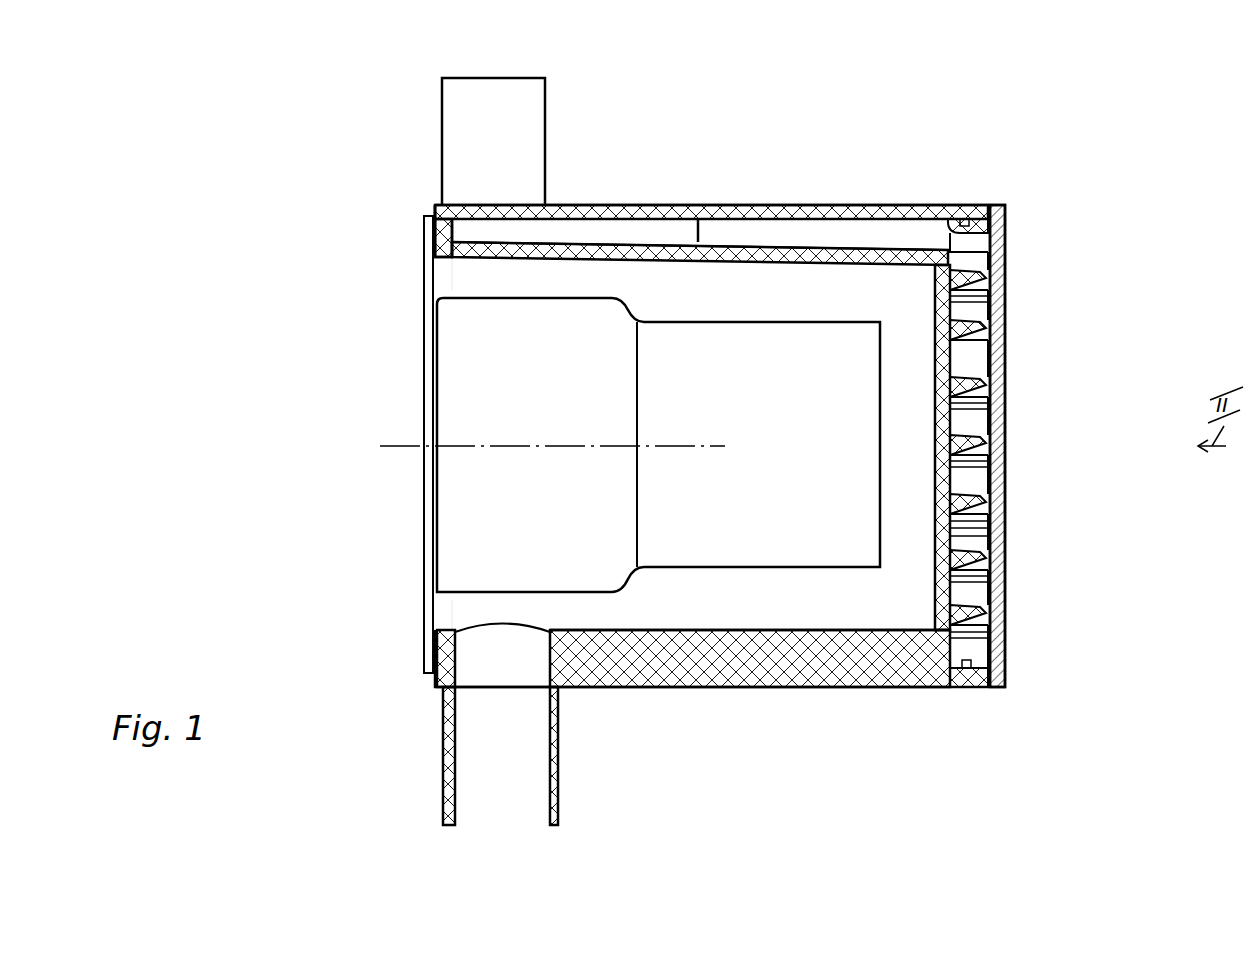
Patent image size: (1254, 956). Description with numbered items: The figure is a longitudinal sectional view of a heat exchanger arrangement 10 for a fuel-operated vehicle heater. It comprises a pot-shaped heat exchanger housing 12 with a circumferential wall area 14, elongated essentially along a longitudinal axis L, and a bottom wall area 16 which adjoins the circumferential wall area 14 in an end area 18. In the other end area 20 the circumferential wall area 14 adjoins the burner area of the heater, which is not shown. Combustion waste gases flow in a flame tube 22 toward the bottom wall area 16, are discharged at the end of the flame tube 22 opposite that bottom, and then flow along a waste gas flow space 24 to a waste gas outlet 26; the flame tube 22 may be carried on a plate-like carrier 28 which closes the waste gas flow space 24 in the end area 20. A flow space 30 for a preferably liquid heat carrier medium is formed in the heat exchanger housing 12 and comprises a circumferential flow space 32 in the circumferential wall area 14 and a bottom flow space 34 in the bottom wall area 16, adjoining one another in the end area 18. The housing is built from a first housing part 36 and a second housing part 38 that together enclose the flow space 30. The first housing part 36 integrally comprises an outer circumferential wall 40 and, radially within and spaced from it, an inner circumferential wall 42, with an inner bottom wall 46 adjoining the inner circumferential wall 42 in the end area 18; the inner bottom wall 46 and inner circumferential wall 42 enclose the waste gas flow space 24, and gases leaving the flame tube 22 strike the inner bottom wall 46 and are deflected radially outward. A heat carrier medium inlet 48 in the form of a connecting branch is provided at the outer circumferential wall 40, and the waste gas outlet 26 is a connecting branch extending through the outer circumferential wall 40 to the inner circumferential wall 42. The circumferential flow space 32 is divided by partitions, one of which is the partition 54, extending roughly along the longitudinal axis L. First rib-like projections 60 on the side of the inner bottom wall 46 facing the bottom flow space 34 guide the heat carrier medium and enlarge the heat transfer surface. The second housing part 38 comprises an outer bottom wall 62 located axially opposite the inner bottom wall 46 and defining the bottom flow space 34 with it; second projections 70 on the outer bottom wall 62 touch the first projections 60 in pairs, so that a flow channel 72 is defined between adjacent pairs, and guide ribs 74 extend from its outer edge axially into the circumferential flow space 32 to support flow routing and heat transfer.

The heat exchanger arrangement 10 is at (990, 120).
The heat exchanger housing 12 is at (730, 195).
The circumferential wall area 14 is at (628, 205).
The bottom wall area 16 is at (1010, 295).
The end area 18 is at (950, 688).
The end area 20 is at (435, 208).
The flame tube 22 is at (462, 296).
The waste gas flow space 24 is at (735, 598).
The waste gas outlet 26 is at (460, 735).
The plate-like carrier 28 is at (425, 650).
The flow space 30 is at (578, 232).
The circumferential flow space 32 is at (676, 232).
The bottom flow space 34 is at (985, 412).
The first housing part 36 is at (858, 688).
The second housing part 38 is at (1008, 520).
The outer circumferential wall 40 is at (905, 205).
The inner circumferential wall 42 is at (915, 250).
The inner bottom wall 46 is at (985, 592).
The heat carrier medium inlet 48 is at (442, 94).
The partition 54 is at (825, 688).
The first rib-like projections 60 is at (985, 350).
The outer bottom wall 62 is at (1008, 440).
The second projections 70 is at (1012, 300).
The flow channel 72 is at (985, 472).
The guide ribs 74 is at (822, 235).
The longitudinal axis L is at (385, 452).